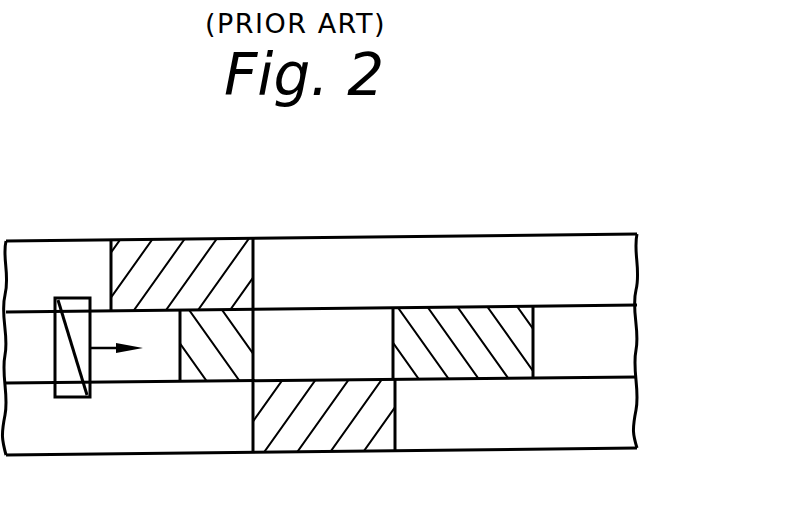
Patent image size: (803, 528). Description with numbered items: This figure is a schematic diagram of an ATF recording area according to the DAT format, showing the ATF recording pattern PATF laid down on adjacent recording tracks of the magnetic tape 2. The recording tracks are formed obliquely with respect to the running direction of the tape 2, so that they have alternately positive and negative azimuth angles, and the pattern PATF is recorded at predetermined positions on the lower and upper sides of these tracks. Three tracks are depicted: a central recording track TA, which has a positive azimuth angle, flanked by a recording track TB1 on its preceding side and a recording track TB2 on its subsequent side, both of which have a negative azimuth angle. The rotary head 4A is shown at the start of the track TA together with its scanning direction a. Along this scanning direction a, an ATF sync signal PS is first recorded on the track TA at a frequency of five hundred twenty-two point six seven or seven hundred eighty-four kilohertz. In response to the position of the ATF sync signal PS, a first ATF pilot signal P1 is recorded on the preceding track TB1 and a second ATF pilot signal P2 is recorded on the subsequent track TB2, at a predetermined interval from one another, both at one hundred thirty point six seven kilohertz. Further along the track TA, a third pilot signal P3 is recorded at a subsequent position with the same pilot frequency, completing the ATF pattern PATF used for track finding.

The magnetic tape 2 is at (246, 148).
The first ATF pilot signal P1 is at (179, 239).
The second ATF pilot signal P2 is at (347, 446).
The third pilot signal P3 is at (535, 346).
The ATF sync signal PS is at (255, 346).
The ATF recording pattern PATF is at (379, 222).
The recording track TB1 is at (640, 264).
The recording track TA is at (640, 339).
The recording track TB2 is at (640, 412).
The rotary head 4A is at (73, 398).
The scanning direction a is at (104, 351).